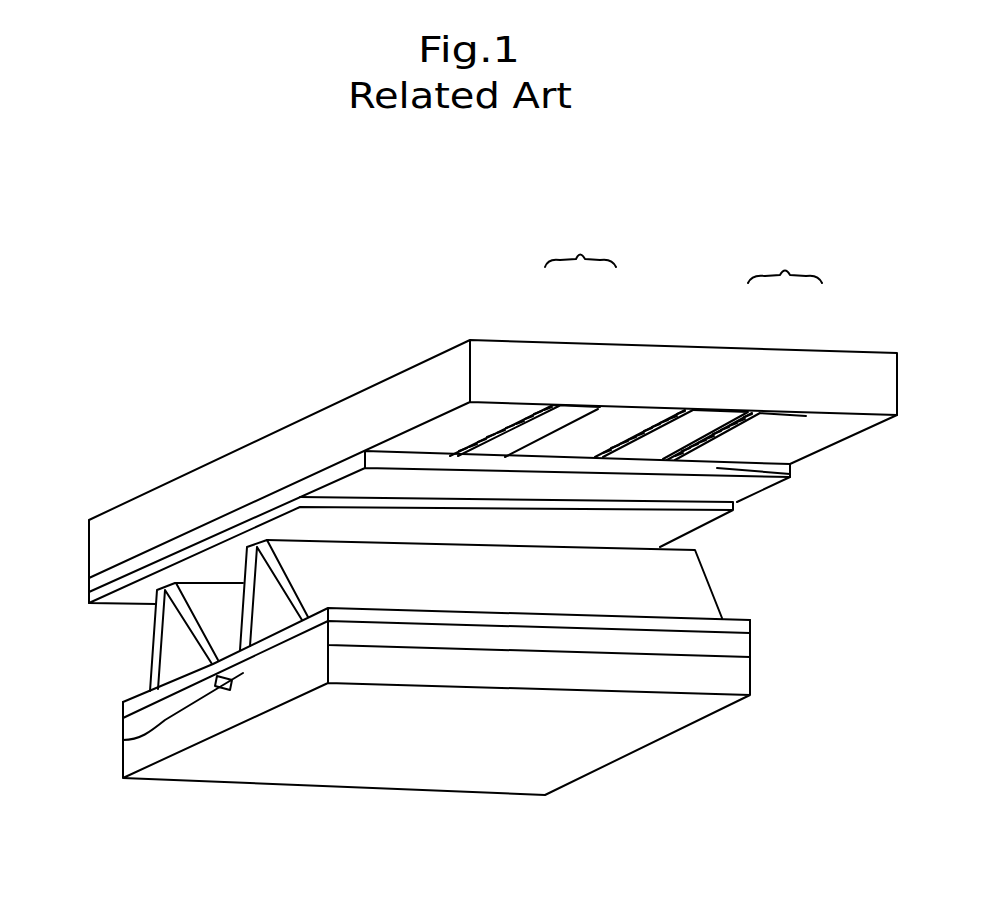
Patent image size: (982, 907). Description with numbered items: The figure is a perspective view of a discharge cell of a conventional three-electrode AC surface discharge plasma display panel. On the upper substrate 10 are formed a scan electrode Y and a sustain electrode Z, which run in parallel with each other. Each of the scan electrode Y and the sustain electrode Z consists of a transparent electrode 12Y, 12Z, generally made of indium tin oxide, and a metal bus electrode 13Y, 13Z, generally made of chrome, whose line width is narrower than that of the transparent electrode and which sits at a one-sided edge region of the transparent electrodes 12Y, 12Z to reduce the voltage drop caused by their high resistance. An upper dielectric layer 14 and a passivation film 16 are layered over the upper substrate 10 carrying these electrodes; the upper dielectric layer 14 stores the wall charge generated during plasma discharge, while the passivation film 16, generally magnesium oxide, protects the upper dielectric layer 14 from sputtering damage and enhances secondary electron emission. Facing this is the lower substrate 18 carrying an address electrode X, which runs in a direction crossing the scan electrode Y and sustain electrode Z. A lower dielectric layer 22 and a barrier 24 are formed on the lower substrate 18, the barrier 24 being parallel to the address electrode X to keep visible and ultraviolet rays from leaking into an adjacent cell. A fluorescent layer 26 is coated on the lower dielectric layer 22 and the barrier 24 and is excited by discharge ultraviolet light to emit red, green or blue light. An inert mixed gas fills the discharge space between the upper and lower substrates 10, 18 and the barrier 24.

The upper substrate 10 is at (678, 350).
The transparent electrode 12Y is at (627, 403).
The metal bus electrode 13Y is at (575, 402).
The scan electrode Y is at (580, 245).
The transparent electrode 12Z is at (717, 403).
The metal bus electrode 13Z is at (793, 410).
The sustain electrode Z is at (785, 261).
The upper dielectric layer 14 is at (320, 478).
The passivation film 16 is at (223, 527).
The lower substrate 18 is at (123, 765).
The lower dielectric layer 22 is at (750, 647).
The barrier 24 is at (168, 660).
The fluorescent layer 26 is at (705, 590).
The address electrode X is at (120, 740).